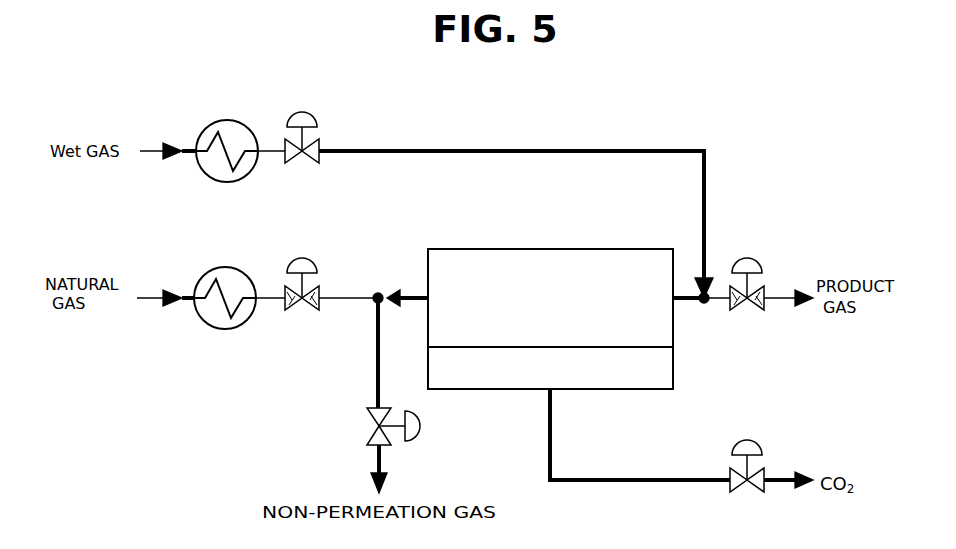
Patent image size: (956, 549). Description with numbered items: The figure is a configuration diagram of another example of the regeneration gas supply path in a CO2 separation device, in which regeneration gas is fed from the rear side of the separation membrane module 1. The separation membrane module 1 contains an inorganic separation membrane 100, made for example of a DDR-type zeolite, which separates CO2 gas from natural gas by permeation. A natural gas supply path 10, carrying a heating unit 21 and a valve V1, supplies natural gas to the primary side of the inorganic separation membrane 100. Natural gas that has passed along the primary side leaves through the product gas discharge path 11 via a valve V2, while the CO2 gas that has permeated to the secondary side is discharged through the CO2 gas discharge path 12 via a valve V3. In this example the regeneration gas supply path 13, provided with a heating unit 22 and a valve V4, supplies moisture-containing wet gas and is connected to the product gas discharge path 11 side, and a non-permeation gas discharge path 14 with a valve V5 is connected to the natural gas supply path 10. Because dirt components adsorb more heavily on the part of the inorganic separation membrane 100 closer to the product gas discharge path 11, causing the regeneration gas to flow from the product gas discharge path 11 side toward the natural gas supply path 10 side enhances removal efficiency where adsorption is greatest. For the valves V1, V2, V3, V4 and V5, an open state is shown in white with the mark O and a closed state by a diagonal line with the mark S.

The separation membrane module 1 is at (551, 248).
The inorganic separation membrane 100 is at (530, 345).
The natural gas supply path 10 is at (357, 295).
The product gas discharge path 11 is at (777, 293).
The CO2 gas discharge path 12 is at (632, 485).
The regeneration gas supply path 13 is at (552, 149).
The non-permeation gas discharge path 14 is at (375, 372).
The heating unit 21 is at (227, 268).
The heating unit 22 is at (228, 121).
The valve V1 is at (300, 305).
The valve V2 is at (742, 306).
The valve V3 is at (742, 488).
The valve V4 is at (298, 158).
The valve V5 is at (372, 425).